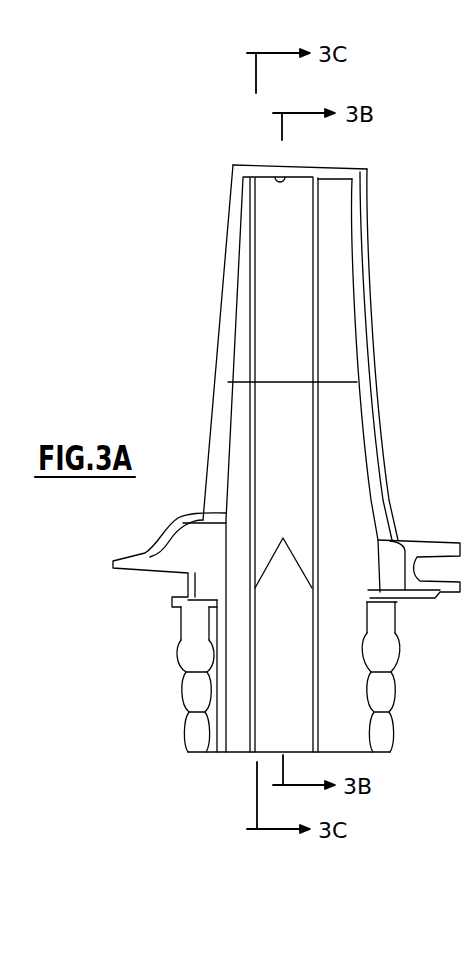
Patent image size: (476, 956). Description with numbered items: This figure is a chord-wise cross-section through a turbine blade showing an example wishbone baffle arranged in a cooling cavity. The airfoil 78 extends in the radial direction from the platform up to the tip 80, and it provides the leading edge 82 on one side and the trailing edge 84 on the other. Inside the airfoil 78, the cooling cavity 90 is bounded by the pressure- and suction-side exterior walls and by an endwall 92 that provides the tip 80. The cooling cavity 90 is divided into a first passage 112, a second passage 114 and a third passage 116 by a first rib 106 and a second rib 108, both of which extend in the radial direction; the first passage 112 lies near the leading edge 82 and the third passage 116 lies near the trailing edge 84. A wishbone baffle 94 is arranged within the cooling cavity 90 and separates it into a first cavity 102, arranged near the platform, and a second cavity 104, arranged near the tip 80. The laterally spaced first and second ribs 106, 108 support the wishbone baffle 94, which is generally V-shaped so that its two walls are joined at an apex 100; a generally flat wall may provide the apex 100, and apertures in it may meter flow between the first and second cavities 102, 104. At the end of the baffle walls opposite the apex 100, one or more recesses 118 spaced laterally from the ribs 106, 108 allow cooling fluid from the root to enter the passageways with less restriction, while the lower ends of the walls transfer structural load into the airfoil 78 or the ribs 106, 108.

The airfoil 78 is at (382, 165).
The tip 80 is at (260, 165).
The leading edge 82 is at (218, 328).
The trailing edge 84 is at (368, 328).
The cooling cavity 90 is at (346, 206).
The endwall 92 is at (287, 179).
The wishbone baffle 94 is at (303, 441).
The apex 100 is at (270, 378).
The first cavity 102 is at (272, 588).
The second cavity 104 is at (262, 286).
The first rib 106 is at (253, 477).
The second rib 108 is at (318, 478).
The first passage 112 is at (238, 423).
The second passage 114 is at (303, 269).
The third passage 116 is at (346, 369).
The recess 118 is at (305, 565).